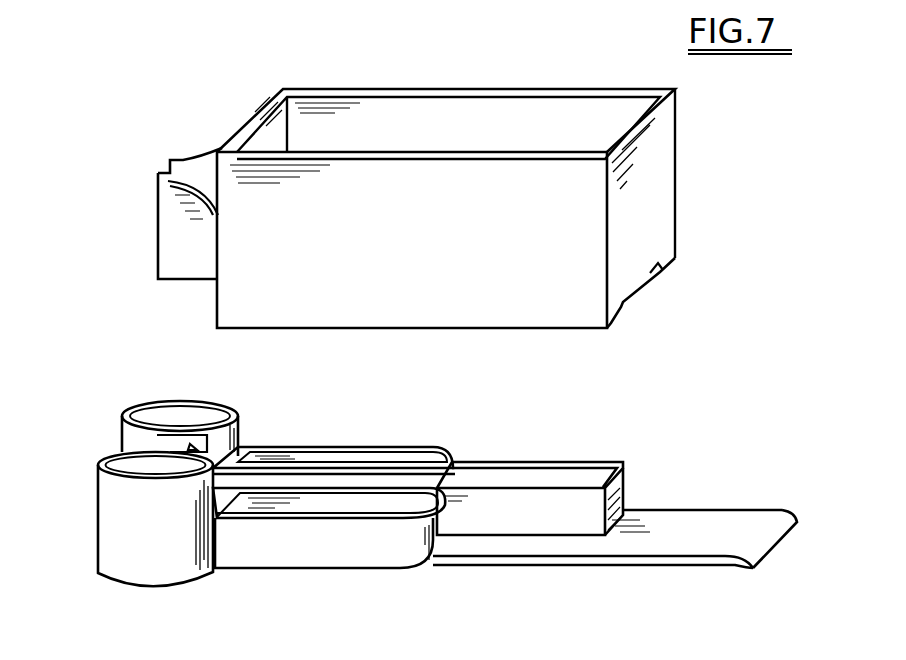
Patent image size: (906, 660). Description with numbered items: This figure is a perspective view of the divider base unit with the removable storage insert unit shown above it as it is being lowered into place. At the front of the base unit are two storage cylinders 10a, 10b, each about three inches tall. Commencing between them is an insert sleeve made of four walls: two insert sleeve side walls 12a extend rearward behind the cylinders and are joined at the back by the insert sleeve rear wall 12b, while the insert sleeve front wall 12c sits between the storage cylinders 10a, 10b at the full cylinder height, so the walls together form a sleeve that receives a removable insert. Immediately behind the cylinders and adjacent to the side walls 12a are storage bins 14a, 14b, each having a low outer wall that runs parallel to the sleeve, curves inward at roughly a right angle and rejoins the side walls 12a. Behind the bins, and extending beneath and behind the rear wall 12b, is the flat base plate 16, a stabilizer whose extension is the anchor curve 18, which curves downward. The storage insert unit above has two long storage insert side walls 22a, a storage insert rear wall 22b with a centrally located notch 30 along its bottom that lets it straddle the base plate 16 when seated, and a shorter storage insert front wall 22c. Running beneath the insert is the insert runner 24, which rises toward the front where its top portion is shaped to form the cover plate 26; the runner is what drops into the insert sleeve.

The storage cylinder 10a is at (177, 412).
The storage cylinder 10b is at (142, 503).
The insert sleeve side wall 12a is at (480, 465).
The insert sleeve rear wall 12b is at (627, 470).
The insert sleeve front wall 12c is at (163, 438).
The storage bin 14a is at (352, 460).
The storage bin 14b is at (340, 553).
The base plate 16 is at (662, 527).
The anchor curve 18 is at (763, 532).
The storage insert side wall 22a is at (387, 157).
The storage insert rear wall 22b is at (657, 162).
The storage insert front wall 22c is at (275, 128).
The insert runner 24 is at (180, 223).
The cover plate 26 is at (203, 163).
The notch 30 is at (642, 280).